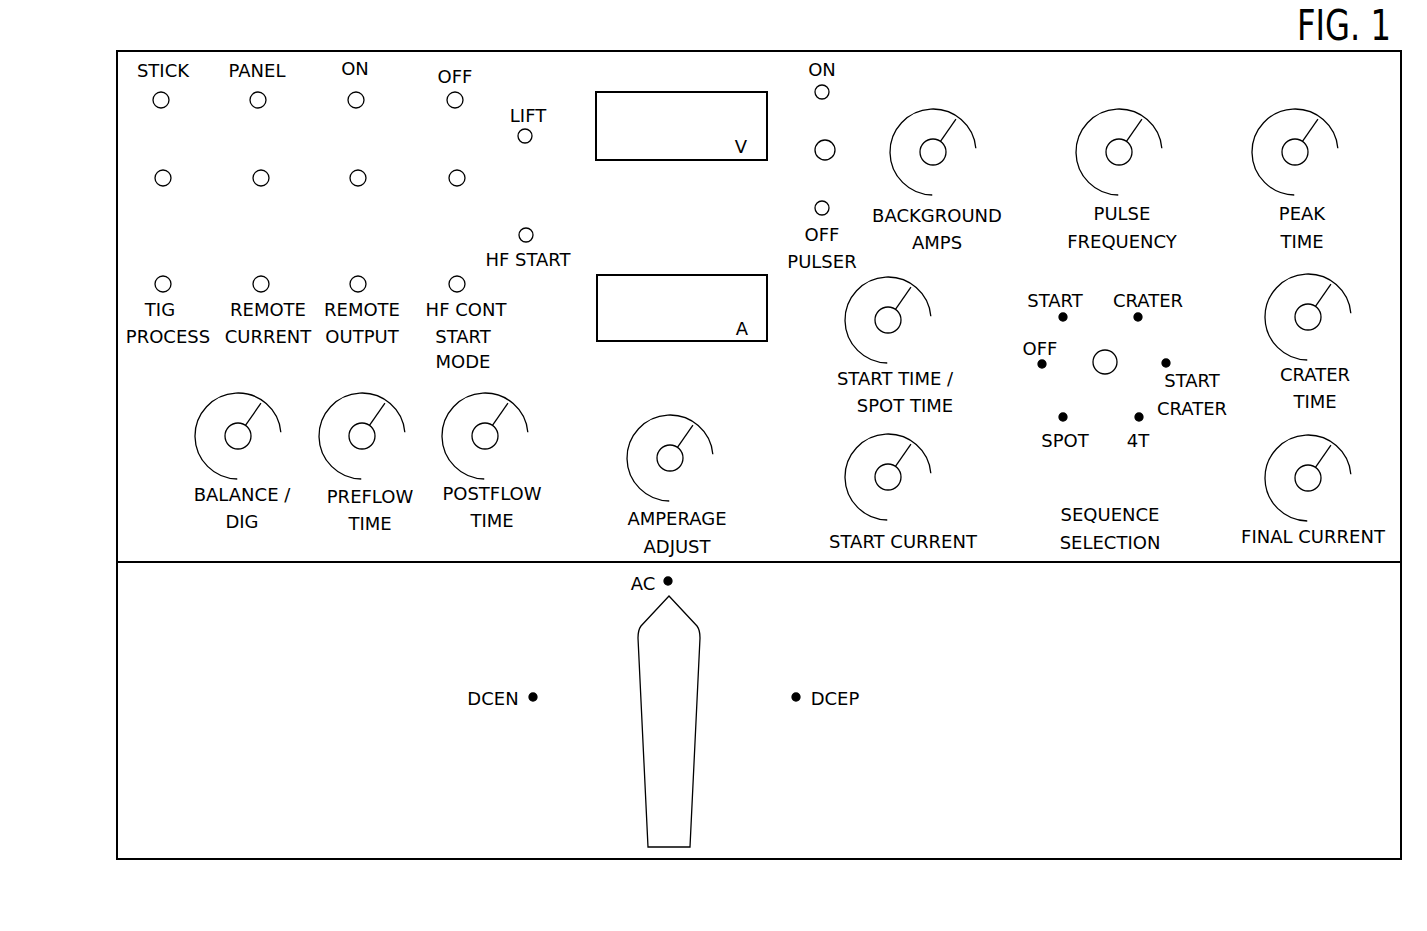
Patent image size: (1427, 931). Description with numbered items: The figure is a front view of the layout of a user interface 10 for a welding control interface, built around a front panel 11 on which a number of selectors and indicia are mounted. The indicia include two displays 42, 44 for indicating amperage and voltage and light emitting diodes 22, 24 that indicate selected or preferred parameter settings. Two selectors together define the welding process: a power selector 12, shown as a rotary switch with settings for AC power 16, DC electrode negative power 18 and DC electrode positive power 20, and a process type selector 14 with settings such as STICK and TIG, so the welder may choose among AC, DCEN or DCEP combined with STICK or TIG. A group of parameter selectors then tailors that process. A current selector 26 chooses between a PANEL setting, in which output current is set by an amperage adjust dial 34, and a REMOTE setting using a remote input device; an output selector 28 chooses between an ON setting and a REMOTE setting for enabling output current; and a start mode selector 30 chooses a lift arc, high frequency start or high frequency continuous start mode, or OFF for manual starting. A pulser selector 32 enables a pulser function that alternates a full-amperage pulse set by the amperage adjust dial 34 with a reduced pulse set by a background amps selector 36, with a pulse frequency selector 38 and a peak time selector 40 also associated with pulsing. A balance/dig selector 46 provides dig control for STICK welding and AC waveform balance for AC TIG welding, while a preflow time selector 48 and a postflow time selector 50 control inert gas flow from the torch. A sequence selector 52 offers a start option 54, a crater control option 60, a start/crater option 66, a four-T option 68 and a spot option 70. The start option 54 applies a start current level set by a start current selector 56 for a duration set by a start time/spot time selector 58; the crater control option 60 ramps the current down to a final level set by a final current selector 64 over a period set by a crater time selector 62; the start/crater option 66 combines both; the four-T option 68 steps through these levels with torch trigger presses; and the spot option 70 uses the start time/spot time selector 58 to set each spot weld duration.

The user interface 10 is at (1047, 47).
The front panel 11 is at (1377, 87).
The power selector 12 is at (687, 700).
The process type selector 14 is at (170, 183).
The AC power setting 16 is at (672, 580).
The DC electrode negative (DCEN) power setting 18 is at (532, 692).
The DC electrode positive (DCEP) power setting 20 is at (796, 692).
The light emitting diode 22 is at (168, 104).
The light emitting diode 24 is at (170, 279).
The current selector 26 is at (268, 183).
The output selector 28 is at (365, 183).
The start mode selector 30 is at (464, 183).
The pulser selector 32 is at (831, 142).
The amperage adjust dial 34 is at (693, 425).
The background amps selector 36 is at (956, 119).
The pulse frequency selector 38 is at (1142, 119).
The peak time selector 40 is at (1318, 119).
The display 42 is at (682, 92).
The display 44 is at (681, 274).
The balance/dig selector 46 is at (261, 403).
The preflow time selector 48 is at (385, 403).
The postflow time selector 50 is at (508, 403).
The sequence selector 52 is at (1105, 350).
The start option 54 is at (1059, 317).
The start current selector 56 is at (911, 444).
The start time/spot time selector 58 is at (911, 287).
The crater control option 60 is at (1138, 321).
The crater time selector 62 is at (1331, 284).
The final current selector 64 is at (1331, 445).
The start/crater option 66 is at (1170, 362).
The 4T option 68 is at (1138, 414).
The spot option 70 is at (1061, 415).